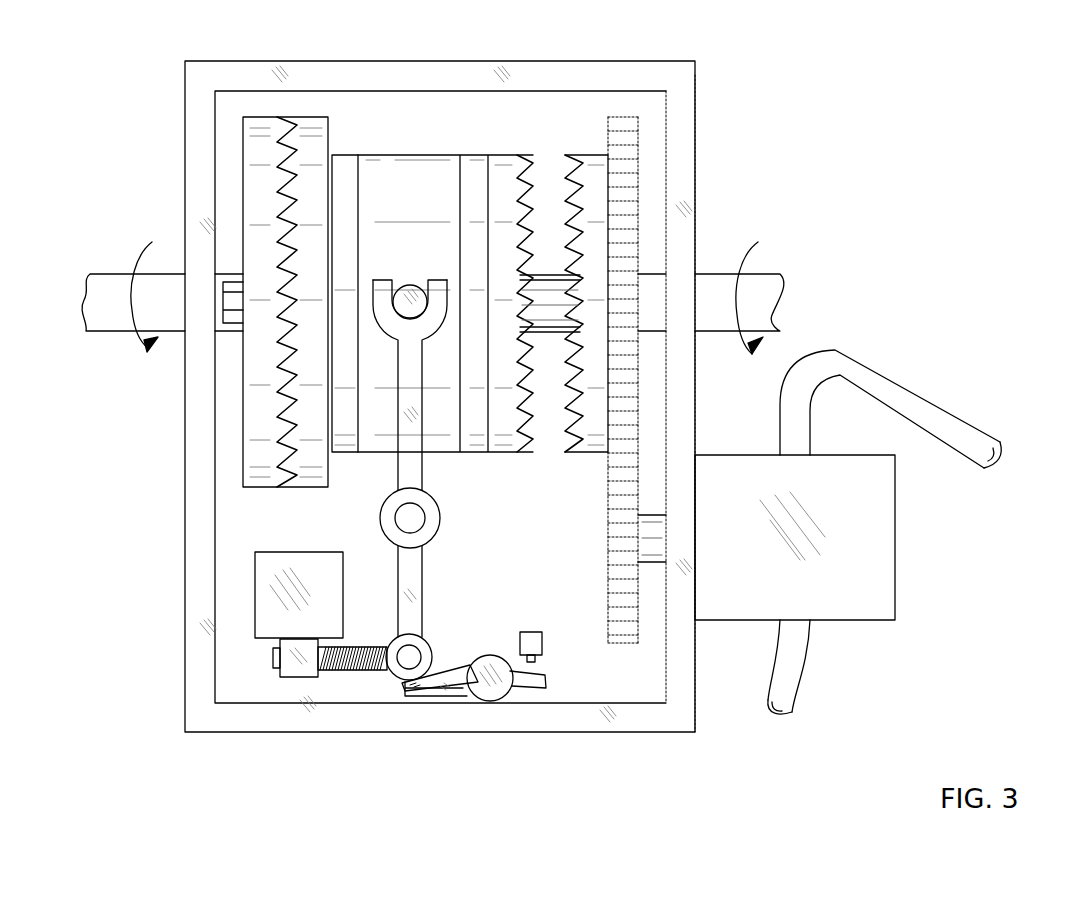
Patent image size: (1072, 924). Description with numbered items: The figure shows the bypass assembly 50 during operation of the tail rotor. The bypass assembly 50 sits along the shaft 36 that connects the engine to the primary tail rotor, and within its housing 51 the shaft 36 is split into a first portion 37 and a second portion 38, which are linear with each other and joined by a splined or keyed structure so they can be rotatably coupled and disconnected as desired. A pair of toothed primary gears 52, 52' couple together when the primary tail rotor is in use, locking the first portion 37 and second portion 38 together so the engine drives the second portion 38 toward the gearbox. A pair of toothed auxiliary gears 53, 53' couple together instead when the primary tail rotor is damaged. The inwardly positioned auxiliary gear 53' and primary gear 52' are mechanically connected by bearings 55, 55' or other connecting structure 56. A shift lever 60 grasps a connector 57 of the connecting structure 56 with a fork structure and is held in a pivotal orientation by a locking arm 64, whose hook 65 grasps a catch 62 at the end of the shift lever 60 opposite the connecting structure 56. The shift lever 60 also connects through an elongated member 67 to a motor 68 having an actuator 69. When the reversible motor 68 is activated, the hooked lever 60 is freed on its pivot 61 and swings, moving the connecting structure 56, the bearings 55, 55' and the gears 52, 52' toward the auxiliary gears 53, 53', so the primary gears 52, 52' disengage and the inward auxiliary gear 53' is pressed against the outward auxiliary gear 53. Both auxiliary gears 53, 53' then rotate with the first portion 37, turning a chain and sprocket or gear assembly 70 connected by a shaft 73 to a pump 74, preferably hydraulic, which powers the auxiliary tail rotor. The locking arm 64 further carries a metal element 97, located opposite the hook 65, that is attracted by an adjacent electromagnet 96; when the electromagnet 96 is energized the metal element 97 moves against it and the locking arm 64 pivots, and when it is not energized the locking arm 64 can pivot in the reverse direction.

The shaft 36 is at (767, 272).
The first portion 37 is at (777, 290).
The second portion 38 is at (103, 283).
The bypass assembly 50 is at (910, 123).
The housing 51 is at (687, 152).
The primary gear 52 is at (189, 310).
The primary gear 52' is at (176, 320).
The auxiliary gear 53 is at (633, 331).
The auxiliary gear 53' is at (577, 232).
The bearing 55 is at (271, 236).
The bearing 55' is at (497, 234).
The connecting structure 56 is at (444, 158).
The connector 57 is at (404, 293).
The shift lever 60 is at (398, 568).
The pivot 61 is at (397, 518).
The catch 62 is at (437, 683).
The locking arm 64 is at (458, 692).
The hook 65 is at (397, 688).
The elongated member 67 is at (350, 670).
The motor 68 is at (266, 633).
The actuator 69 is at (300, 670).
The sprocket assembly 70 is at (608, 550).
The shaft 73 is at (653, 563).
The pump 74 is at (895, 560).
The electromagnet 96 is at (530, 635).
The metal element 97 is at (535, 681).